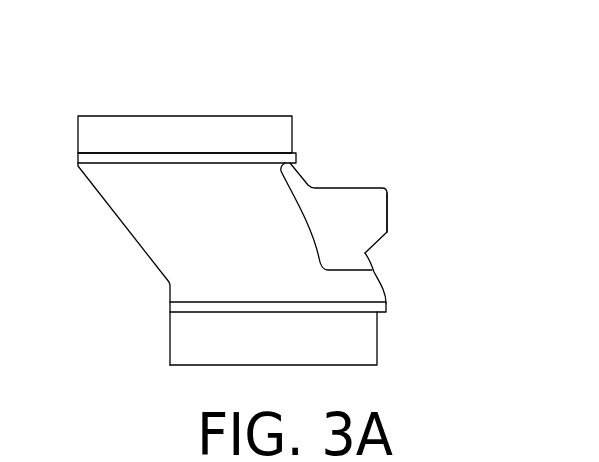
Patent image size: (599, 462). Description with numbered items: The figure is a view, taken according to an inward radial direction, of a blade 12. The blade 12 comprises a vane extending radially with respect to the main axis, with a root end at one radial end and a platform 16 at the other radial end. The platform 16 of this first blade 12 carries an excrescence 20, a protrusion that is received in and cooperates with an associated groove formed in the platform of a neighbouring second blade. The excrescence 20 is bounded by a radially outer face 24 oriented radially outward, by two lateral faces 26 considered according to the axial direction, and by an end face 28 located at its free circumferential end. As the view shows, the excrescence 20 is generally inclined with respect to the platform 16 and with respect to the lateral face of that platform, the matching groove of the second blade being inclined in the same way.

The blade 12 is at (278, 96).
The platform 16 is at (143, 290).
The excrescence 20 is at (377, 178).
The radially outer face 24 is at (358, 202).
The lateral faces 26 is at (333, 187).
The end face 28 is at (388, 208).